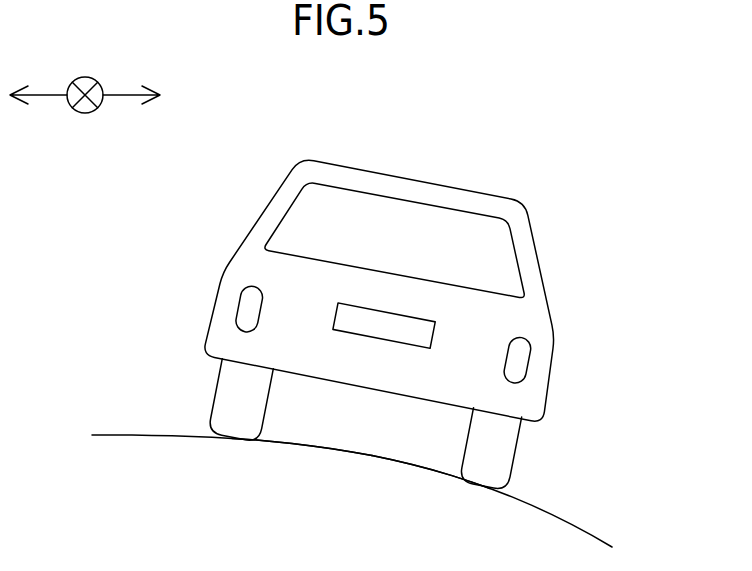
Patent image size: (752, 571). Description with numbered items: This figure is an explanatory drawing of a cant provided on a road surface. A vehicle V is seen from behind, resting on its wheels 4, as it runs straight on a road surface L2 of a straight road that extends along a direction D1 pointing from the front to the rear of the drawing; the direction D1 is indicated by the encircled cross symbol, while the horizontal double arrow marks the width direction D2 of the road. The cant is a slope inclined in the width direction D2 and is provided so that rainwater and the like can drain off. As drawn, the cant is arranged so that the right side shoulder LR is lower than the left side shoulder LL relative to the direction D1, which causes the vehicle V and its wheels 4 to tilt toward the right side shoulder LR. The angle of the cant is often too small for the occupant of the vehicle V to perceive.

The wheel 4 is at (238, 402).
The vehicle V is at (480, 175).
The left side shoulder LL is at (110, 435).
The right side shoulder LR is at (600, 538).
The road surface L2 is at (380, 443).
The direction D1 is at (59, 114).
The width direction D2 is at (152, 95).